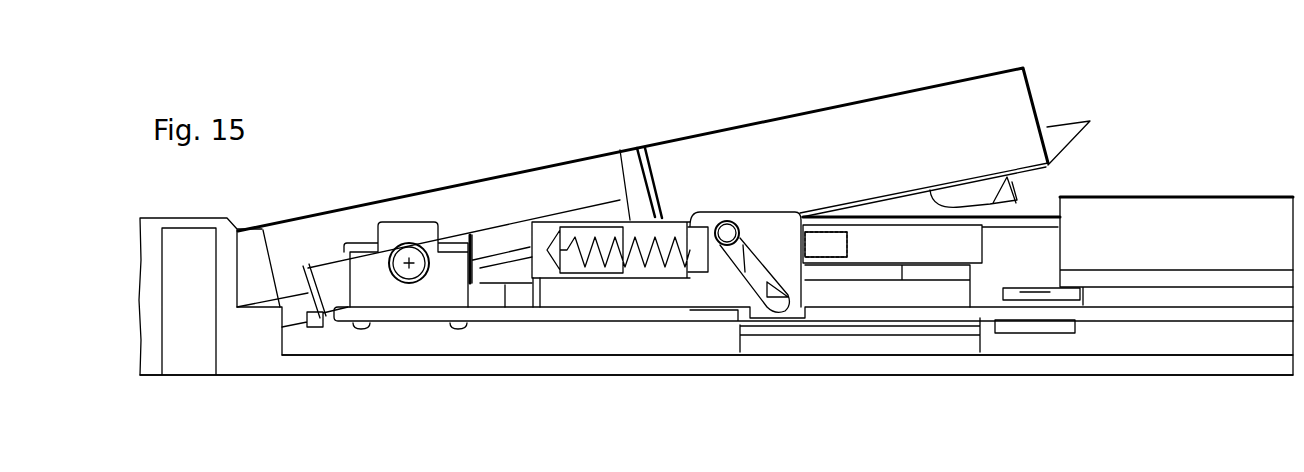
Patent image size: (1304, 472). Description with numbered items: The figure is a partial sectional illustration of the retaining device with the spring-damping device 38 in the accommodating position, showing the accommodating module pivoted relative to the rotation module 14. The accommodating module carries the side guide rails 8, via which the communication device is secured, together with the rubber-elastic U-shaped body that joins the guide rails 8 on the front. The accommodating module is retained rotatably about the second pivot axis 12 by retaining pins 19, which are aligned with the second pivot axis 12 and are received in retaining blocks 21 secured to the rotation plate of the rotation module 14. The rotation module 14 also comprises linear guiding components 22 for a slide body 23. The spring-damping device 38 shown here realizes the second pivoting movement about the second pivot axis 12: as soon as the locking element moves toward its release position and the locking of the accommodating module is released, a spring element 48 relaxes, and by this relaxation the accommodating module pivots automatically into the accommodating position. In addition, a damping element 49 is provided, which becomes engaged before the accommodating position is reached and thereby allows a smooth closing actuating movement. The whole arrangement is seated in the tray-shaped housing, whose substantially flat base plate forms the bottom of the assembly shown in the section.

The guide rail 8 is at (898, 113).
The spring-damping device 38 is at (692, 149).
The spring element 48 is at (630, 200).
The retaining pin 19 is at (403, 243).
The second pivot axis 12 is at (407, 271).
The retaining block 21 is at (436, 290).
The slide body 23 is at (727, 288).
The linear guiding component 22 is at (823, 310).
The damping element 49 is at (873, 247).
The rotation module 14 is at (1180, 162).